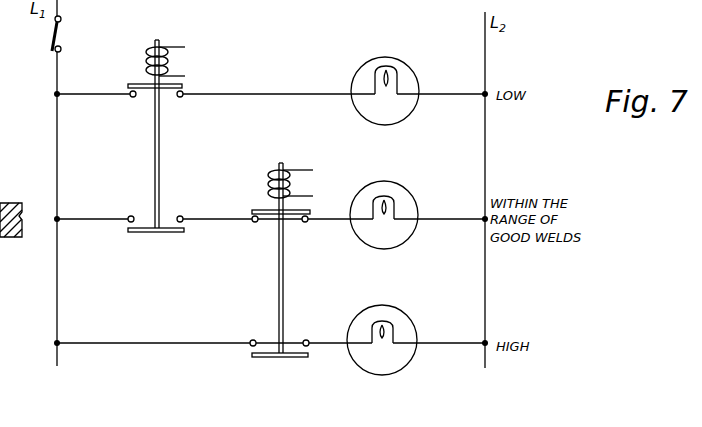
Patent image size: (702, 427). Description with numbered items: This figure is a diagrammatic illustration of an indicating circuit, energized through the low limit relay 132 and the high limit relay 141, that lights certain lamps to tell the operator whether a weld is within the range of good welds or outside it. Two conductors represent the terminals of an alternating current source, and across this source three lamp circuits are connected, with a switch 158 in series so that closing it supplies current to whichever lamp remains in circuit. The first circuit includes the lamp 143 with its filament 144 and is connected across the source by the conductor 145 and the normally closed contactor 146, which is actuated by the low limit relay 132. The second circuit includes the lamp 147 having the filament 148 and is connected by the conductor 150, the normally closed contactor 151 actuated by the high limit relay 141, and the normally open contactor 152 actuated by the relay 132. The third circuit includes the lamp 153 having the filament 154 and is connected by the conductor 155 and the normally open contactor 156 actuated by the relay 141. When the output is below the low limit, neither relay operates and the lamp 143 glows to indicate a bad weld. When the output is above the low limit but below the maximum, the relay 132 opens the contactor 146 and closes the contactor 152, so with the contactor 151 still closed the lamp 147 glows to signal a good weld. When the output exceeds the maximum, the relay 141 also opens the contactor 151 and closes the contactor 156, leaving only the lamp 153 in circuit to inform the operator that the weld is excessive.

The switch 158 is at (50, 44).
The conductor 145 is at (256, 93).
The normally closed contactor 146 is at (136, 84).
The low limit relay 132 is at (170, 66).
The normally open contactor 152 is at (136, 233).
The lamp 143 is at (388, 55).
The filament 144 is at (380, 72).
The conductor 150 is at (322, 223).
The normally closed contactor 151 is at (262, 209).
The high limit relay 141 is at (272, 173).
The normally open contactor 156 is at (288, 358).
The lamp 147 is at (409, 187).
The filament 148 is at (378, 199).
The conductor 155 is at (138, 341).
The lamp 153 is at (416, 320).
The filament 154 is at (381, 324).